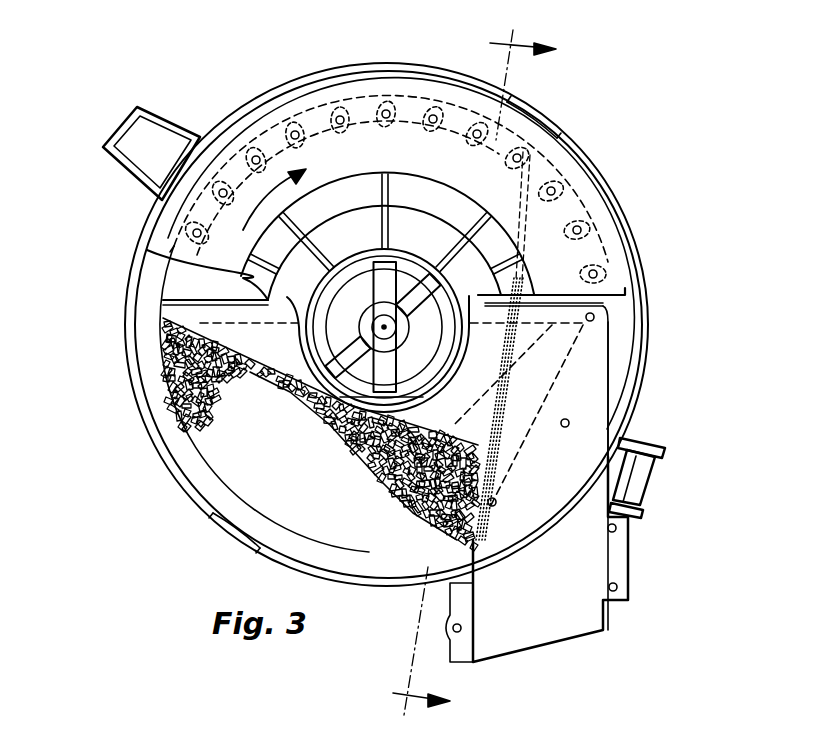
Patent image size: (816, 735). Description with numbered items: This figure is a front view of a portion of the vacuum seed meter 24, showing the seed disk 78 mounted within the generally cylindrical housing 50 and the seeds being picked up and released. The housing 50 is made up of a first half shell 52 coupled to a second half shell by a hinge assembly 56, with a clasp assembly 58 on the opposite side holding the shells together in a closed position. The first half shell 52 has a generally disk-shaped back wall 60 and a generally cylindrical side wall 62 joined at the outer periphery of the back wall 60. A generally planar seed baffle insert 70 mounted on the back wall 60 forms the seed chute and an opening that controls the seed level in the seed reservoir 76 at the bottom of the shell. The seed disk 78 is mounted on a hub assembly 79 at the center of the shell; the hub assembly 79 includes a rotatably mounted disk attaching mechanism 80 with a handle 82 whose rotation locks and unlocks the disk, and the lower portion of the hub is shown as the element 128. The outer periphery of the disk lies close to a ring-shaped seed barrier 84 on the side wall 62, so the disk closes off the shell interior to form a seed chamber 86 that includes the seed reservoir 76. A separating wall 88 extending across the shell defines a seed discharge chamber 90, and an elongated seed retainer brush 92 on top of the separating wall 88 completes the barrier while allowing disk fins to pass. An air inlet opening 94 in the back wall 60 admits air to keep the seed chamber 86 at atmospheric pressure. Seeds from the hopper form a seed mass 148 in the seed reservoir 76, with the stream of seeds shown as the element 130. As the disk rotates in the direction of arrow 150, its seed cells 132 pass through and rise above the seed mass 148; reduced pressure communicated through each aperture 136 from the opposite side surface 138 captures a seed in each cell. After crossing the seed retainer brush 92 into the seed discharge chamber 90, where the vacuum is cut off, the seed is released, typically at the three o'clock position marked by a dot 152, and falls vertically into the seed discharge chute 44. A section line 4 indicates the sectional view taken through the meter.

The section line 4- 4 is at (468, 365).
The vacuum seed meter 24 is at (626, 190).
The seed discharge chute 44 is at (592, 576).
The cylindrical housing 50 is at (579, 135).
The first half shell 52 is at (163, 458).
The hinge assembly 56 is at (648, 480).
The clasp assembly 58 is at (122, 125).
The back wall 60 is at (165, 277).
The side wall 62 is at (165, 300).
The seed baffle insert 70 is at (200, 316).
The seed reservoir 76 is at (186, 394).
The seed disk 78 is at (380, 78).
The hub assembly 79 is at (372, 256).
The disk attaching mechanism 80 is at (478, 275).
The handle 82 is at (398, 266).
The seed barrier 84 is at (608, 240).
The seed chamber 86 is at (428, 118).
The separating wall 88 is at (500, 398).
The seed discharge chamber 90 is at (612, 306).
The seed retainer brush 92 is at (546, 272).
The air inlet opening 94 is at (360, 110).
The impeller cover 128 is at (432, 398).
The debris stream 130 is at (308, 378).
The seed cells 132 is at (258, 150).
The aperture 136 is at (258, 162).
The side surface 138 is at (172, 230).
The seed mass 148 is at (346, 516).
The arrow 150 is at (297, 188).
The dot 152 is at (603, 340).